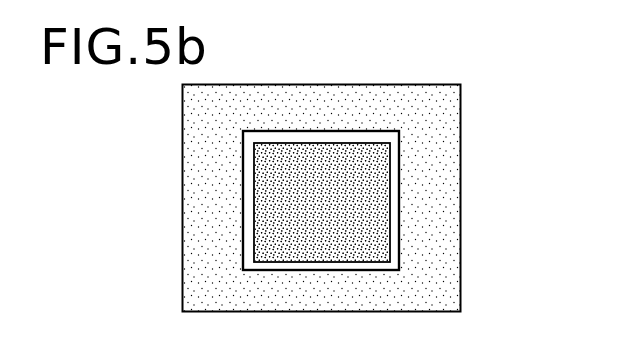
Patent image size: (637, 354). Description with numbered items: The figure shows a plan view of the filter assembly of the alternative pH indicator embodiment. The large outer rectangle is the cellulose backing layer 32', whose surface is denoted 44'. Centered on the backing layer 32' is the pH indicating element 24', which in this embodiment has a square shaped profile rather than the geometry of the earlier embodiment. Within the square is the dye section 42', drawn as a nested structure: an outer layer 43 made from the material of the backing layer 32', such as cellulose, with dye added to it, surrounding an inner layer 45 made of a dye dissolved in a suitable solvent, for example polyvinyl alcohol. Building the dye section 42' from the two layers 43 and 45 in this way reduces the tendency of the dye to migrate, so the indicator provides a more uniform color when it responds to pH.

The surface of substrate 44' is at (276, 198).
The backing layer 32' is at (307, 198).
The pH indicating element 24' is at (341, 157).
The layer 43 is at (400, 270).
The dye section 42' is at (322, 155).
The layer 45 is at (372, 209).